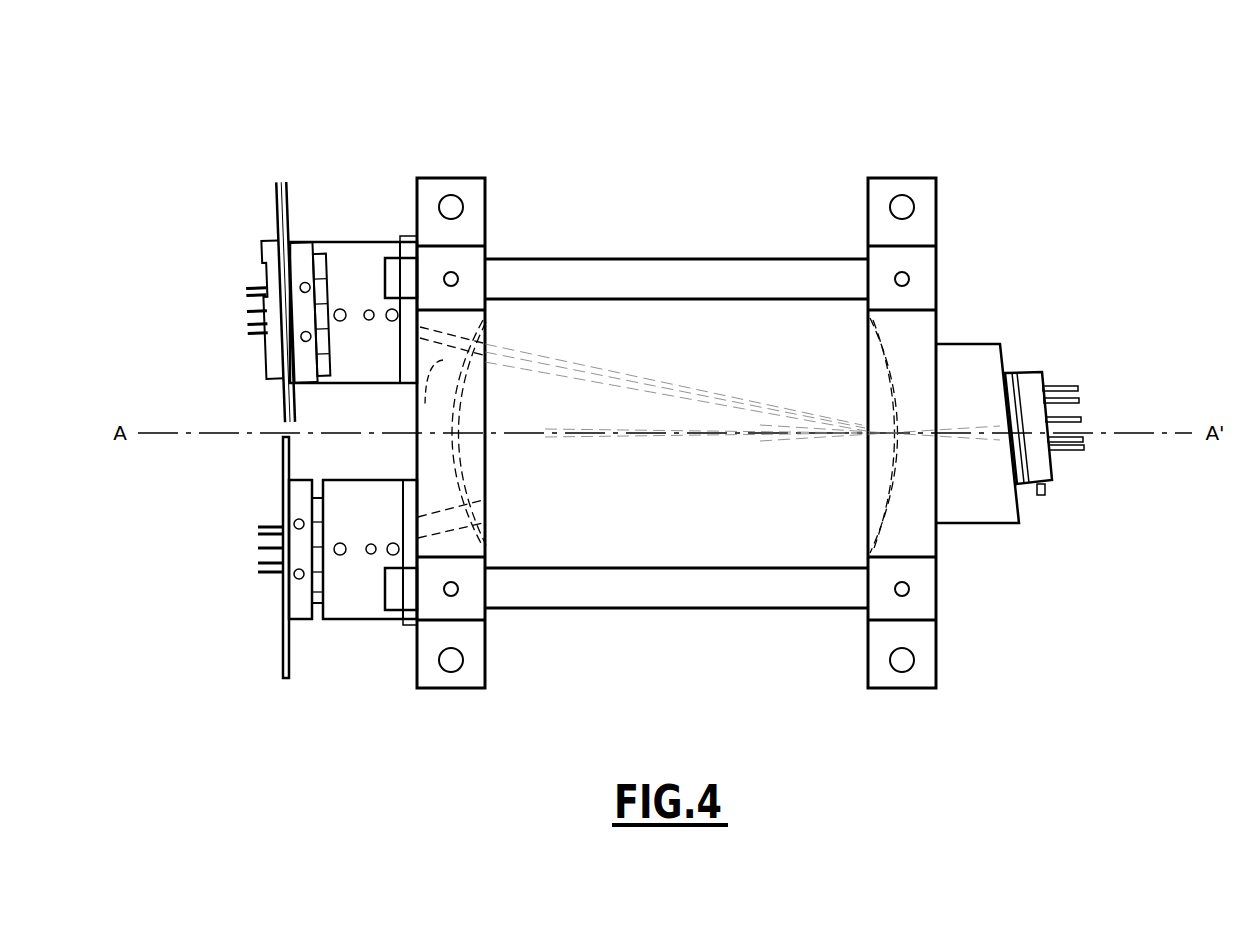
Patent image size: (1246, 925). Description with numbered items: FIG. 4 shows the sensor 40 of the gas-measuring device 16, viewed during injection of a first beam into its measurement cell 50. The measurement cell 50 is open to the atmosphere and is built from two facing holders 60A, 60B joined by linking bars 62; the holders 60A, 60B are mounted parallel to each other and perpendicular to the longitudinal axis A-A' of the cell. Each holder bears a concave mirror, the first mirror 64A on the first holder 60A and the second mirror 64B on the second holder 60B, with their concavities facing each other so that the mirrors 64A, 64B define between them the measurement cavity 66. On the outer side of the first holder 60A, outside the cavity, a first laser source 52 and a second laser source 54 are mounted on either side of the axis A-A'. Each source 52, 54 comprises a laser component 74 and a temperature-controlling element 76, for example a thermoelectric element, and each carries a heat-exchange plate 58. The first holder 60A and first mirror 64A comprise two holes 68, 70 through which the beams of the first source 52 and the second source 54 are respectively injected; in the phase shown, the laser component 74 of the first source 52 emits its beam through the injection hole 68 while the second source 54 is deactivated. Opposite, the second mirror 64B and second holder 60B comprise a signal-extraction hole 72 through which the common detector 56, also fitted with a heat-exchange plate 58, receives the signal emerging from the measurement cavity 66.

The imaging device 16 is at (1033, 147).
The sensor 40 is at (511, 155).
The measurement cell 50 is at (701, 230).
The first laser source 52 is at (348, 362).
The second laser source 54 is at (345, 620).
The common detector 56 is at (972, 495).
The heat-exchange plate 58 is at (1043, 467).
The first holder 60A is at (465, 607).
The second holder 60B is at (882, 607).
The linking bar 62 is at (633, 262).
The first mirror 64A is at (470, 387).
The second mirror 64B is at (868, 363).
The measurement cavity 66 is at (703, 509).
The injection hole 68 is at (416, 407).
The injection hole 70 is at (482, 508).
The signal-extraction hole 72 is at (918, 432).
The laser component 74 is at (392, 312).
The temperature-controlling element 76 is at (340, 310).